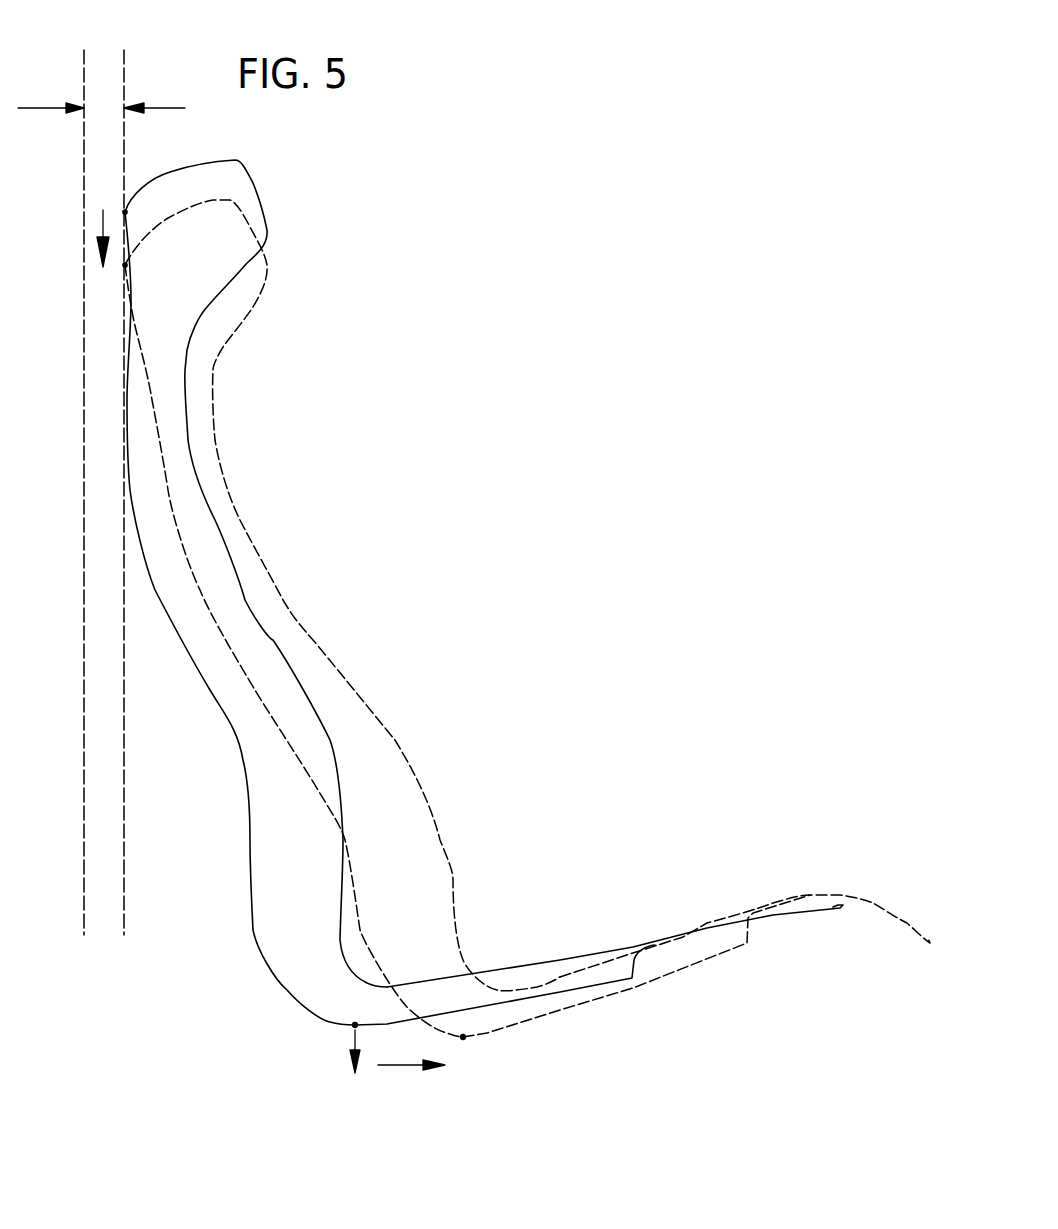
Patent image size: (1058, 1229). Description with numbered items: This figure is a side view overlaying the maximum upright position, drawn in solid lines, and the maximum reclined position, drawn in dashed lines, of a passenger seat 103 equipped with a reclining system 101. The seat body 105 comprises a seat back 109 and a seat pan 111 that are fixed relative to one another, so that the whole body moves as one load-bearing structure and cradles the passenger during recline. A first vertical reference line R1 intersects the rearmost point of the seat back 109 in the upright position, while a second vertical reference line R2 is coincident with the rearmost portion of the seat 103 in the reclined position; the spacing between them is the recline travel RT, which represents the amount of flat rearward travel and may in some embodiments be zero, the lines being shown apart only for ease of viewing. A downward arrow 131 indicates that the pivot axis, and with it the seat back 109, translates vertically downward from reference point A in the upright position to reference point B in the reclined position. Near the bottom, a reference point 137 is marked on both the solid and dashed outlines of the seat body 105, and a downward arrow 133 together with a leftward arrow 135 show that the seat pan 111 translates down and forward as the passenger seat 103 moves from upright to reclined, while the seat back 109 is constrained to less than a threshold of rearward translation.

The reclining system 101 is at (527, 598).
The passenger seat 103 is at (357, 347).
The seat body 105 is at (357, 442).
The seat back 109 is at (225, 557).
The seat pan 111 is at (583, 953).
The downward arrow 131 is at (103, 231).
The downward arrow 133 is at (353, 1040).
The leftward arrow 135 is at (398, 1065).
The reference point 137 is at (355, 1025).
The first vertical reference line R1 is at (125, 62).
The second vertical reference line R2 is at (84, 57).
The recline travel RT is at (117, 108).
The reference point A is at (125, 212).
The reference point B is at (125, 267).